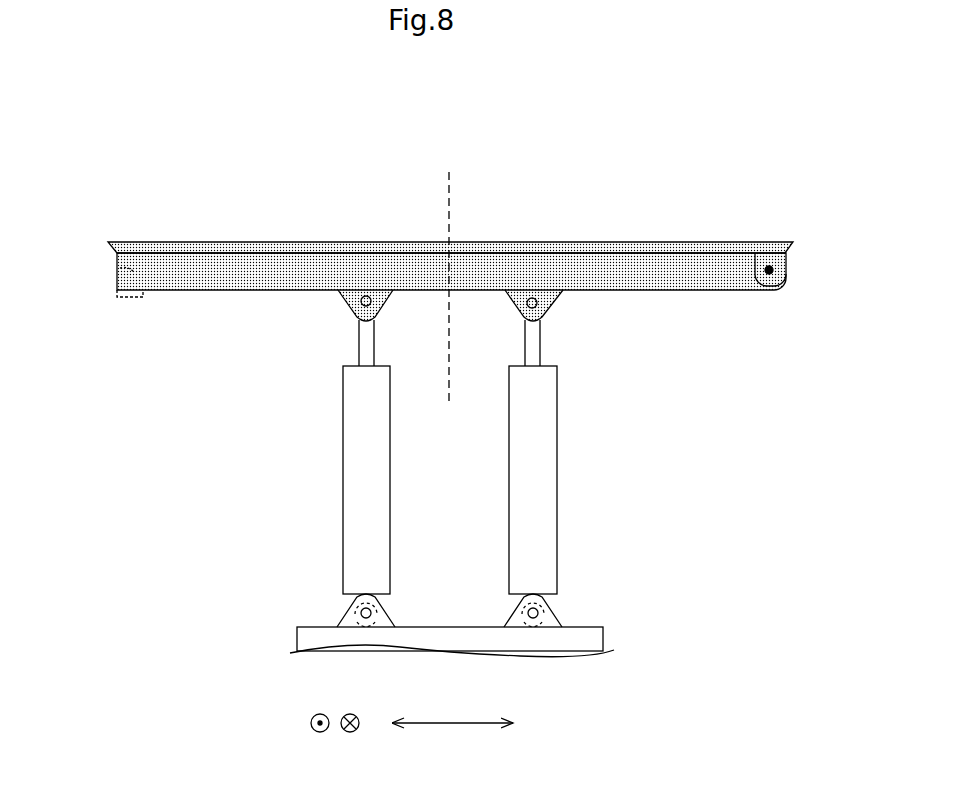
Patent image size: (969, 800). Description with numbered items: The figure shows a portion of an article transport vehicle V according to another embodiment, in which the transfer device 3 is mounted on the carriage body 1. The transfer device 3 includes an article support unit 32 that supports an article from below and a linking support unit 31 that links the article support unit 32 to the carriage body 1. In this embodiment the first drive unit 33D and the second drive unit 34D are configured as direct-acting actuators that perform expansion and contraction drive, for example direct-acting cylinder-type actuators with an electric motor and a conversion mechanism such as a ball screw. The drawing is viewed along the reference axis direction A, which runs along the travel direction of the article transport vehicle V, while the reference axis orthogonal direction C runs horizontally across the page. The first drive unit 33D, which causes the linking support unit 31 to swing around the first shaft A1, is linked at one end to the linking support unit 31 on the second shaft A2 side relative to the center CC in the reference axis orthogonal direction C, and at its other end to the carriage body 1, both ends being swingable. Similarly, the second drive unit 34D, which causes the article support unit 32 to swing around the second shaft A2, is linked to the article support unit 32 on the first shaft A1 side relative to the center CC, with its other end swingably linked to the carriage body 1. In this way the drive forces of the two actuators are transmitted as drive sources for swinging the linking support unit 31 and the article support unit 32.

The carriage body 1 is at (585, 637).
The transfer device 3 is at (450, 267).
The linking support unit 31 is at (236, 302).
The article support unit 32 is at (500, 222).
The first drive unit 33D is at (578, 500).
The second drive unit 34D is at (310, 510).
The first shaft A1 is at (120, 270).
The second shaft A2 is at (786, 270).
The article transport vehicle V is at (118, 132).
The center CC is at (447, 274).
The reference axis direction A is at (335, 710).
The reference axis orthogonal direction C is at (452, 707).